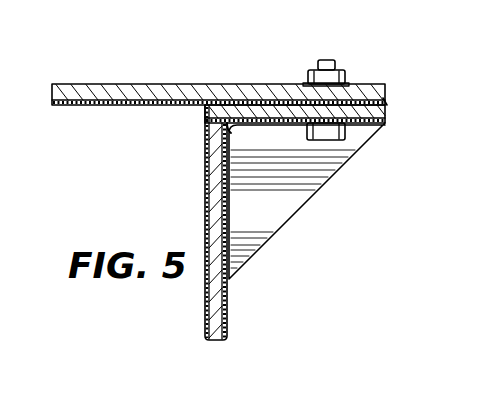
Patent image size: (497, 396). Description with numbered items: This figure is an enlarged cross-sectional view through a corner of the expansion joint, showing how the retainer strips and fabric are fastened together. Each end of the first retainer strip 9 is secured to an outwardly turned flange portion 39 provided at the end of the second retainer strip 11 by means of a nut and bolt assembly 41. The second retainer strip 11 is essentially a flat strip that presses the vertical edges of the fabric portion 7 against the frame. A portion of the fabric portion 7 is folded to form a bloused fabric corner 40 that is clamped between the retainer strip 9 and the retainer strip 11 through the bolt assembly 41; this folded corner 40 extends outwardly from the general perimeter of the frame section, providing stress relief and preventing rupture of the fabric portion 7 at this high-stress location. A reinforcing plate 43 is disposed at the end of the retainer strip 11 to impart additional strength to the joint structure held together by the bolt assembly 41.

The fabric portion 7 is at (197, 121).
The first retainer strip 9 is at (222, 84).
The second retainer strip 11 is at (228, 319).
The outwardly turned flange portion 39 is at (387, 121).
The bloused fabric corner 40 is at (386, 102).
The nut and bolt assembly 41 is at (346, 66).
The reinforcing plate 43 is at (303, 187).